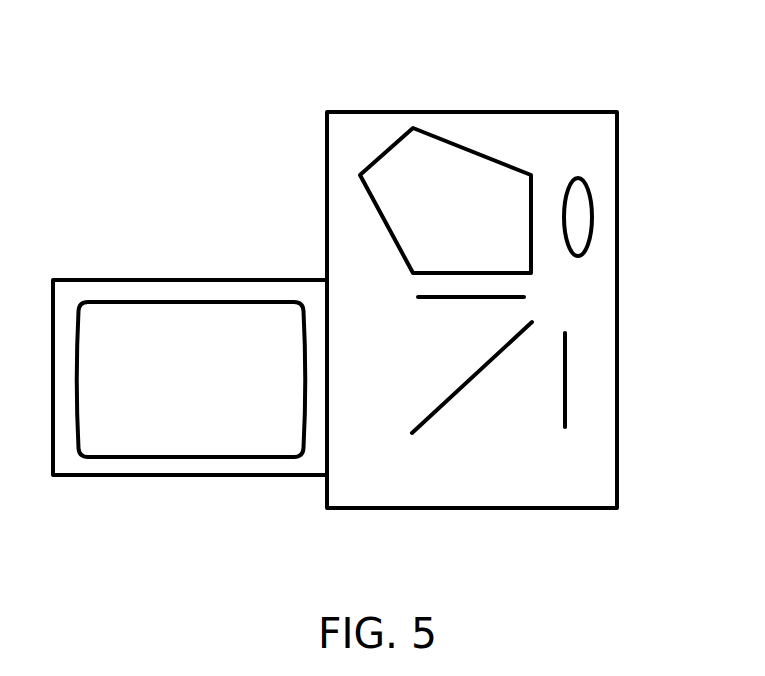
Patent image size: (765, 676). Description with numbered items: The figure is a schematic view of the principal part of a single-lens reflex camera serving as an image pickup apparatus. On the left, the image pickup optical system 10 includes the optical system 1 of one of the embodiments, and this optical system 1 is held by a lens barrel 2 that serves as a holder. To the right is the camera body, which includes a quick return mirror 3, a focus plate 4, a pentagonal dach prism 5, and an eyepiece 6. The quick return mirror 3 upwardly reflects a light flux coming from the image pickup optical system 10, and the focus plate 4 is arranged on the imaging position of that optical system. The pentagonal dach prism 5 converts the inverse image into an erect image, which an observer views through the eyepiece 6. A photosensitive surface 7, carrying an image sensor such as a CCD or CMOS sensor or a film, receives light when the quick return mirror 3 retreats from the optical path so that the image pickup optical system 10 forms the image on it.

The optical system 1 is at (158, 302).
The image pickup optical system 10 is at (252, 280).
The lens barrel 2 is at (192, 475).
The quick return mirror 3 is at (447, 405).
The focus plate 4 is at (452, 300).
The pentagonal dach prism 5 is at (393, 143).
The eyepiece 6 is at (590, 218).
The photosensitive surface 7 is at (567, 390).